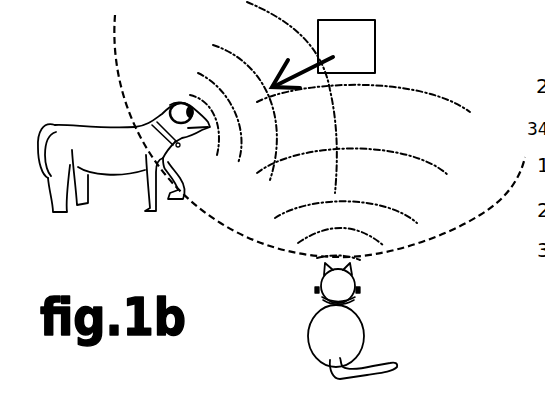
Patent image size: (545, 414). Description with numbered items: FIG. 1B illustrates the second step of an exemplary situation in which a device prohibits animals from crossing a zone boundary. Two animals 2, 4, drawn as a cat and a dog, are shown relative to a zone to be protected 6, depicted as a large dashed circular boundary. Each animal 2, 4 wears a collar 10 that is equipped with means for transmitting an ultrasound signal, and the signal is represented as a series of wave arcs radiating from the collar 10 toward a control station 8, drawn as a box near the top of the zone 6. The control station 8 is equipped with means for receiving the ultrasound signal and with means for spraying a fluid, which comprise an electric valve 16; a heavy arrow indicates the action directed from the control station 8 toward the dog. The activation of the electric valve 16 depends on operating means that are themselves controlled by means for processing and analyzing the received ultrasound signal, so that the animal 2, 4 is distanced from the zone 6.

The animal 2 is at (368, 330).
The animal 4 is at (111, 175).
The zone to be protected 6 is at (220, 222).
The control station 8 is at (375, 37).
The collar 10 is at (166, 126).
The electric valve 16 is at (297, 58).